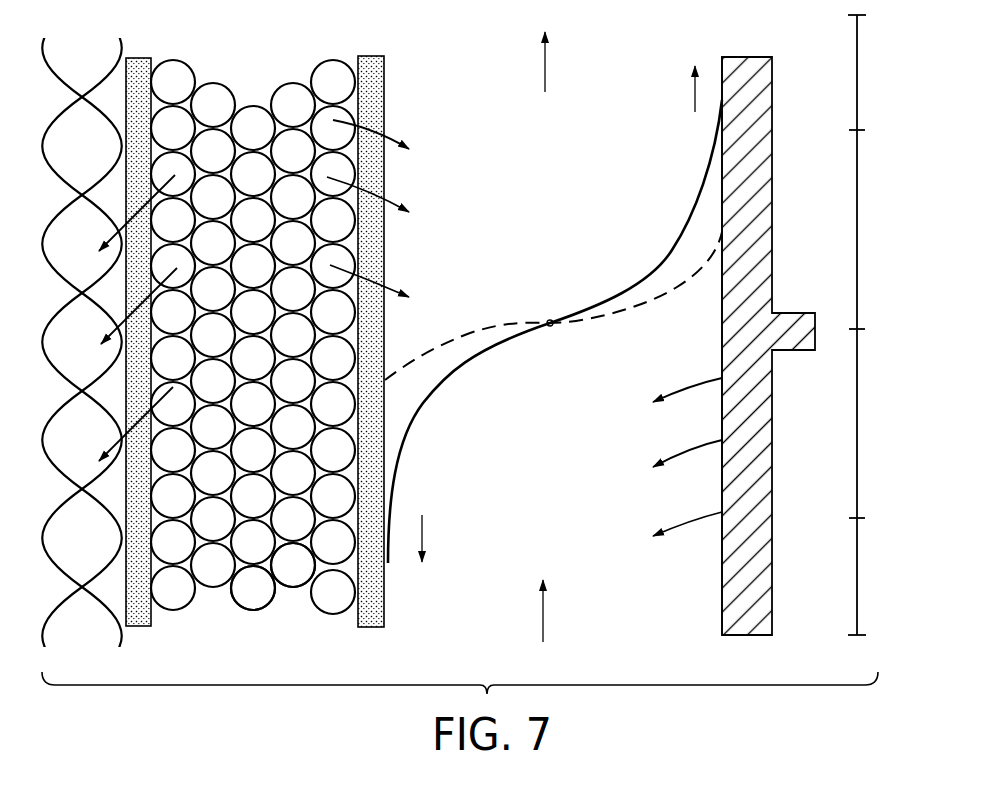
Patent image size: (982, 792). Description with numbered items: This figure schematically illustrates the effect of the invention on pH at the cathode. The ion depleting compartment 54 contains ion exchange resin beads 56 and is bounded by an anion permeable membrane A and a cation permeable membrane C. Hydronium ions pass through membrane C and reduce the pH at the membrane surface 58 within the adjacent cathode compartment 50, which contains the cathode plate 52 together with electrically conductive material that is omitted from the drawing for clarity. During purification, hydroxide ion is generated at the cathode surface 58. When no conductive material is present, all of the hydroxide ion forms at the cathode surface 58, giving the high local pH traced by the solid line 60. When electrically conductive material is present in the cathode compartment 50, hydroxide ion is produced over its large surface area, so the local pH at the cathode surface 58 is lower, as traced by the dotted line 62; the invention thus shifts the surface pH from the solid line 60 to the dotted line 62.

The cathode compartment 50 is at (517, 459).
The cathode plate 52 is at (772, 160).
The ion depleting compartment 54 is at (267, 78).
The ion exchange resin beads 56 is at (285, 582).
The membrane surface / cathode surface 58 is at (385, 95).
The solid line 60 is at (673, 250).
The dotted line 62 is at (684, 292).